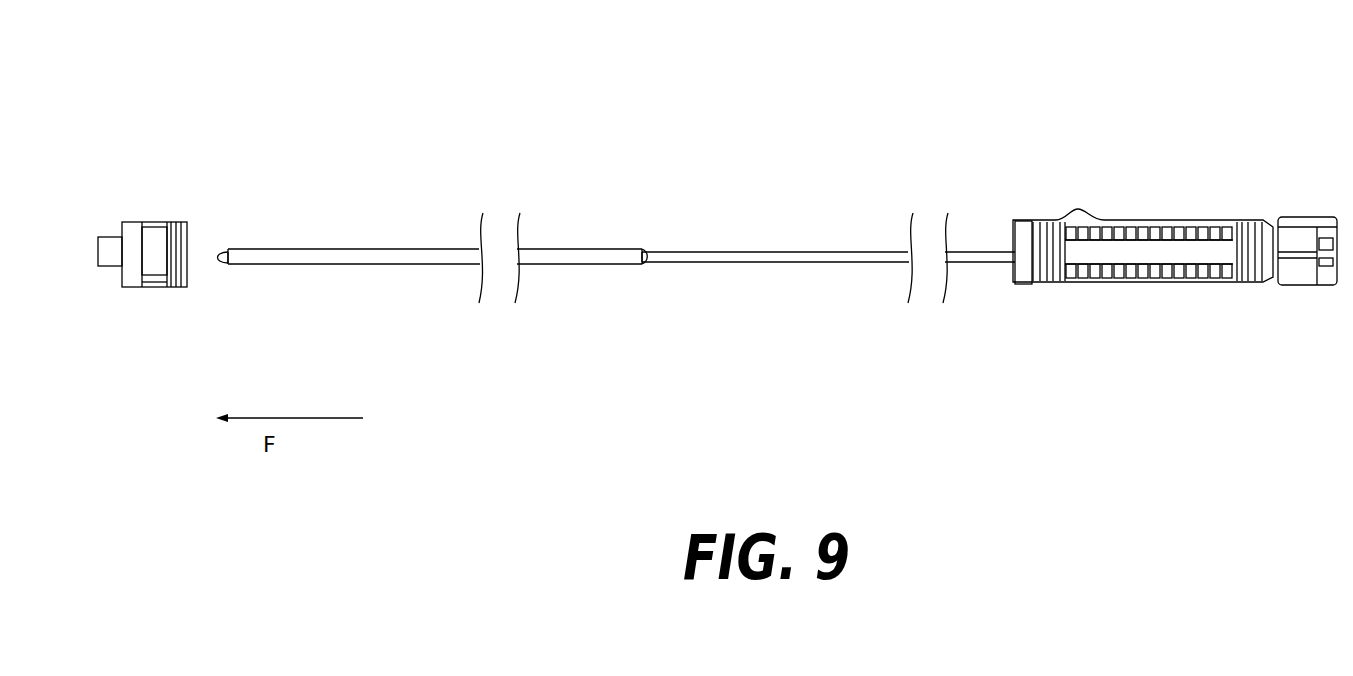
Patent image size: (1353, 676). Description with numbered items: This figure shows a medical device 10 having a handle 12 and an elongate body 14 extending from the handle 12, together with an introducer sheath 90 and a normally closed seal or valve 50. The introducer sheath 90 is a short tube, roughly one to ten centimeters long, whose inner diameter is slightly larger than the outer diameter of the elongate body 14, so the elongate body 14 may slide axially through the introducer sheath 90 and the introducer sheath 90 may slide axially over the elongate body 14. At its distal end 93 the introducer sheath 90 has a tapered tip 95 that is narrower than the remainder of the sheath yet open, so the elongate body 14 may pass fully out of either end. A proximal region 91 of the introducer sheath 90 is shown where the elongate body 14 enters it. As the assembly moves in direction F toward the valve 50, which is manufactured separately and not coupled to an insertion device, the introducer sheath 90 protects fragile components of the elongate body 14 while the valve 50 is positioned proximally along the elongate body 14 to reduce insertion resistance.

The medical device 10 is at (931, 122).
The handle 12 is at (1156, 220).
The elongate body 14 is at (669, 242).
The normally closed seal or valve 50 is at (142, 222).
The introducer sheath 90 is at (364, 265).
The proximal end of tube 91 is at (673, 274).
The distal end 93 is at (235, 276).
The tapered tip 95 is at (227, 250).